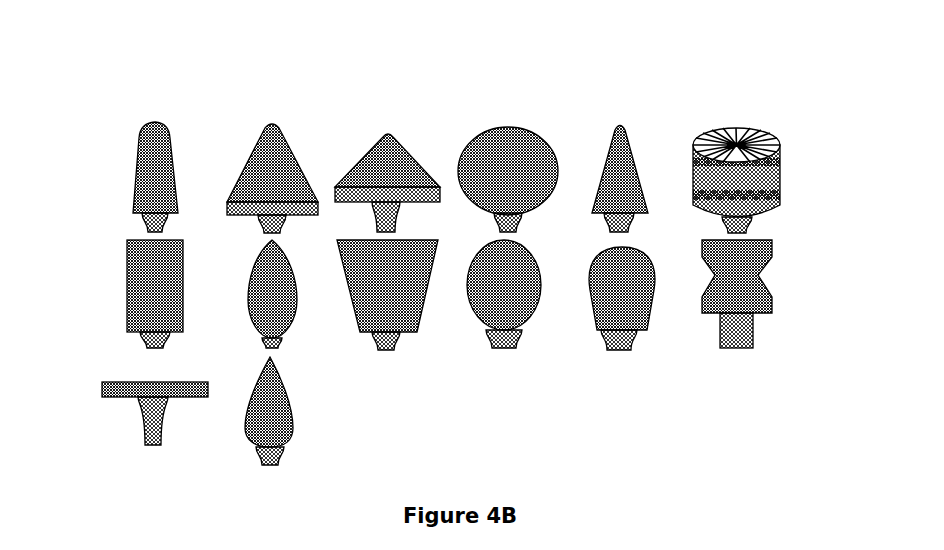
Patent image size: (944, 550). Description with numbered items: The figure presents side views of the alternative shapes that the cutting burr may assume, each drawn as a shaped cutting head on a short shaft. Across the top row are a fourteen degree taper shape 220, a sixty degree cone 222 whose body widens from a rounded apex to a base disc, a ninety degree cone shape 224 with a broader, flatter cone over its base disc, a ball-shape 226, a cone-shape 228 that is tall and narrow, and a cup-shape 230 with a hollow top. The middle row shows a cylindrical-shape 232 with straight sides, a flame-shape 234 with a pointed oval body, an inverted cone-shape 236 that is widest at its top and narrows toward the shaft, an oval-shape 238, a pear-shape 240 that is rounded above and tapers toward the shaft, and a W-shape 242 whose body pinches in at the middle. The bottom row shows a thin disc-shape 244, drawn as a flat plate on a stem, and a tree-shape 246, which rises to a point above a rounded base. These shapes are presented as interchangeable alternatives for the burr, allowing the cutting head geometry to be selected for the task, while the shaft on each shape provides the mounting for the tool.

The 14 Degree Taper shape 220 is at (163, 132).
The 60 Degree Cone 222 is at (280, 137).
The 90 Degree Cone shape 224 is at (378, 148).
The Ball-shape 226 is at (494, 138).
The Cone-shape 228 is at (627, 145).
The Cup-shape 230 is at (743, 138).
The Cylindrical-shape 232 is at (137, 273).
The Flame-shape 234 is at (288, 320).
The Inverted Cone-shape 236 is at (400, 327).
The Oval-shape 238 is at (527, 323).
The Pear-shape 240 is at (630, 322).
The W-shape 242 is at (767, 302).
The Thin Disc-shape 244 is at (102, 388).
The tree-shape 246 is at (268, 428).